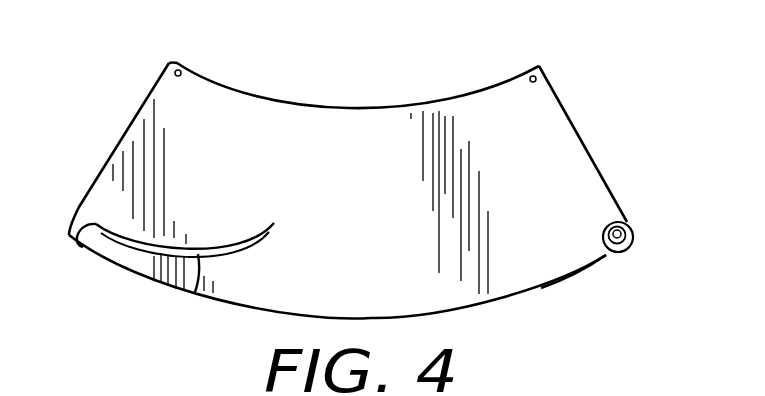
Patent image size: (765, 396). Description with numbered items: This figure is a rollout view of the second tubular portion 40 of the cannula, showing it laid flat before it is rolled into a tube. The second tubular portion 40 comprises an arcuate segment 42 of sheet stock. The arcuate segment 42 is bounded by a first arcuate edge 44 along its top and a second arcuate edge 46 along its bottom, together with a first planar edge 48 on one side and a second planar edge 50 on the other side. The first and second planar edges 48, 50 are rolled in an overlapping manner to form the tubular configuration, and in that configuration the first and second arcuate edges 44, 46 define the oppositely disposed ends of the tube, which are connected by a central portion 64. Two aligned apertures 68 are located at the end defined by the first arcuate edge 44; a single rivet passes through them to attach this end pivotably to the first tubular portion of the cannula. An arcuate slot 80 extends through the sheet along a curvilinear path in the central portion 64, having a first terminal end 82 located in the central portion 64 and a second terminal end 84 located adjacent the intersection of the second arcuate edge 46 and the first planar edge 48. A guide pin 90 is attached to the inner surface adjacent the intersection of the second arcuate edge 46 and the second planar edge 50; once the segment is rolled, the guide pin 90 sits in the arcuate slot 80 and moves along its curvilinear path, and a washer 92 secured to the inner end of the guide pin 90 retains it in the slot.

The second tubular portion 40 is at (363, 197).
The arcuate segment 42 is at (550, 150).
The first arcuate edge 44 is at (325, 103).
The second arcuate edge 46 is at (256, 316).
The first planar edge 48 is at (107, 164).
The second planar edge 50 is at (563, 107).
The central portion 64 is at (368, 172).
The apertures 68 is at (182, 64).
The arcuate slot 80 is at (179, 276).
The first terminal end 82 is at (275, 222).
The second terminal end 84 is at (73, 245).
The guide pin 90 is at (607, 256).
The washer 92 is at (628, 220).